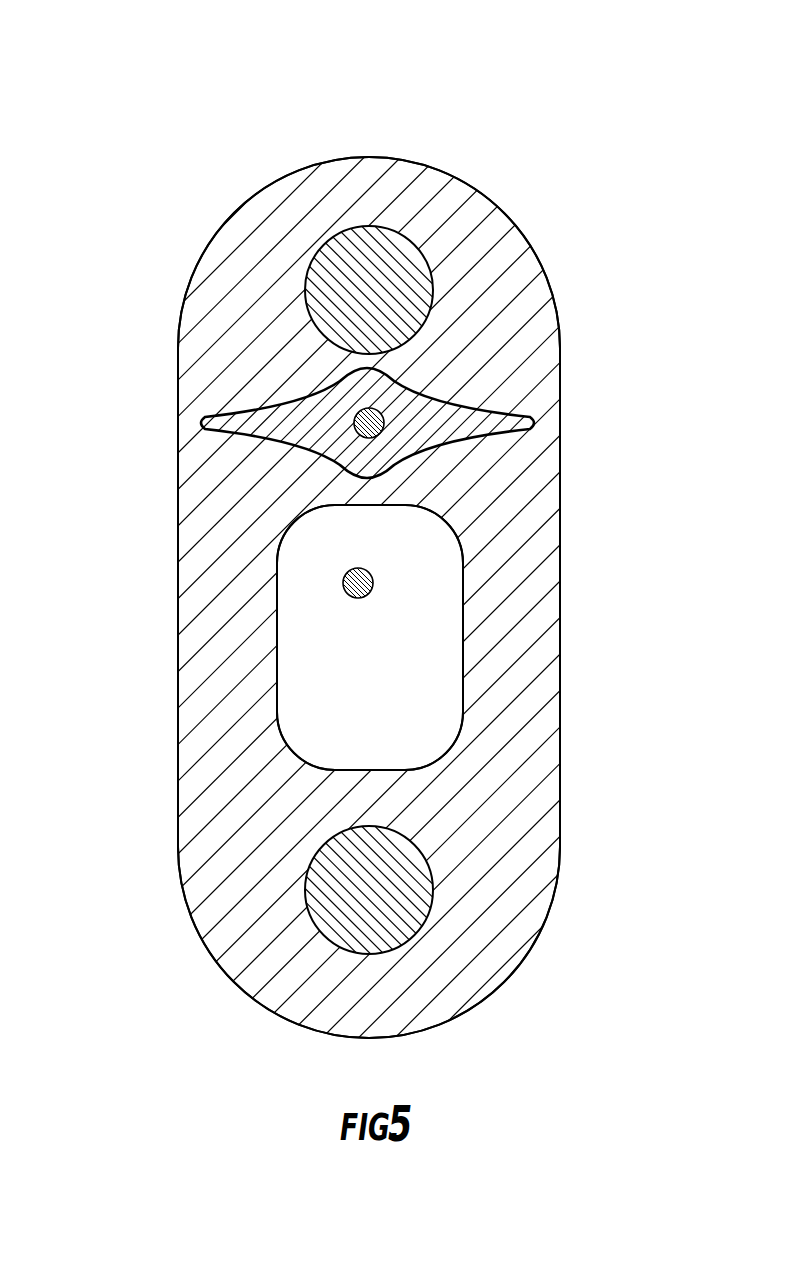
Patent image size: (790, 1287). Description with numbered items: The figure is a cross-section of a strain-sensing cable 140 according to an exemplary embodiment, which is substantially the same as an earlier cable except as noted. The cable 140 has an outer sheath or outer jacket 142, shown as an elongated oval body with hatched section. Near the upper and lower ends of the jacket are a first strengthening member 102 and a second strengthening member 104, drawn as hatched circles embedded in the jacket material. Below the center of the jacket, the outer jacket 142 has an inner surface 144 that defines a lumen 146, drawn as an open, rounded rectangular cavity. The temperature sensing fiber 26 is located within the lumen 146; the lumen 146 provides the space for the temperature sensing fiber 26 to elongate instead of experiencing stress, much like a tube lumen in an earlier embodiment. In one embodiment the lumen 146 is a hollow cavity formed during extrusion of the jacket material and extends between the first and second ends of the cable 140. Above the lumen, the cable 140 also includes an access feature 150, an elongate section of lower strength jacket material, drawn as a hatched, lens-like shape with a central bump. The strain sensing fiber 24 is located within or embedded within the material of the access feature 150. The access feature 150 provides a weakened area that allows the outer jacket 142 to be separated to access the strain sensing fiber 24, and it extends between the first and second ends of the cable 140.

The strain-sensing cable 140 is at (582, 172).
The outer jacket 142 is at (547, 793).
The first strengthening member 102 is at (372, 250).
The second strengthening member 104 is at (347, 918).
The access feature 150 is at (437, 402).
The strain sensing fiber 24 is at (380, 433).
The temperature sensing fiber 26 is at (368, 590).
The inner surface 144 is at (286, 661).
The lumen 146 is at (335, 722).